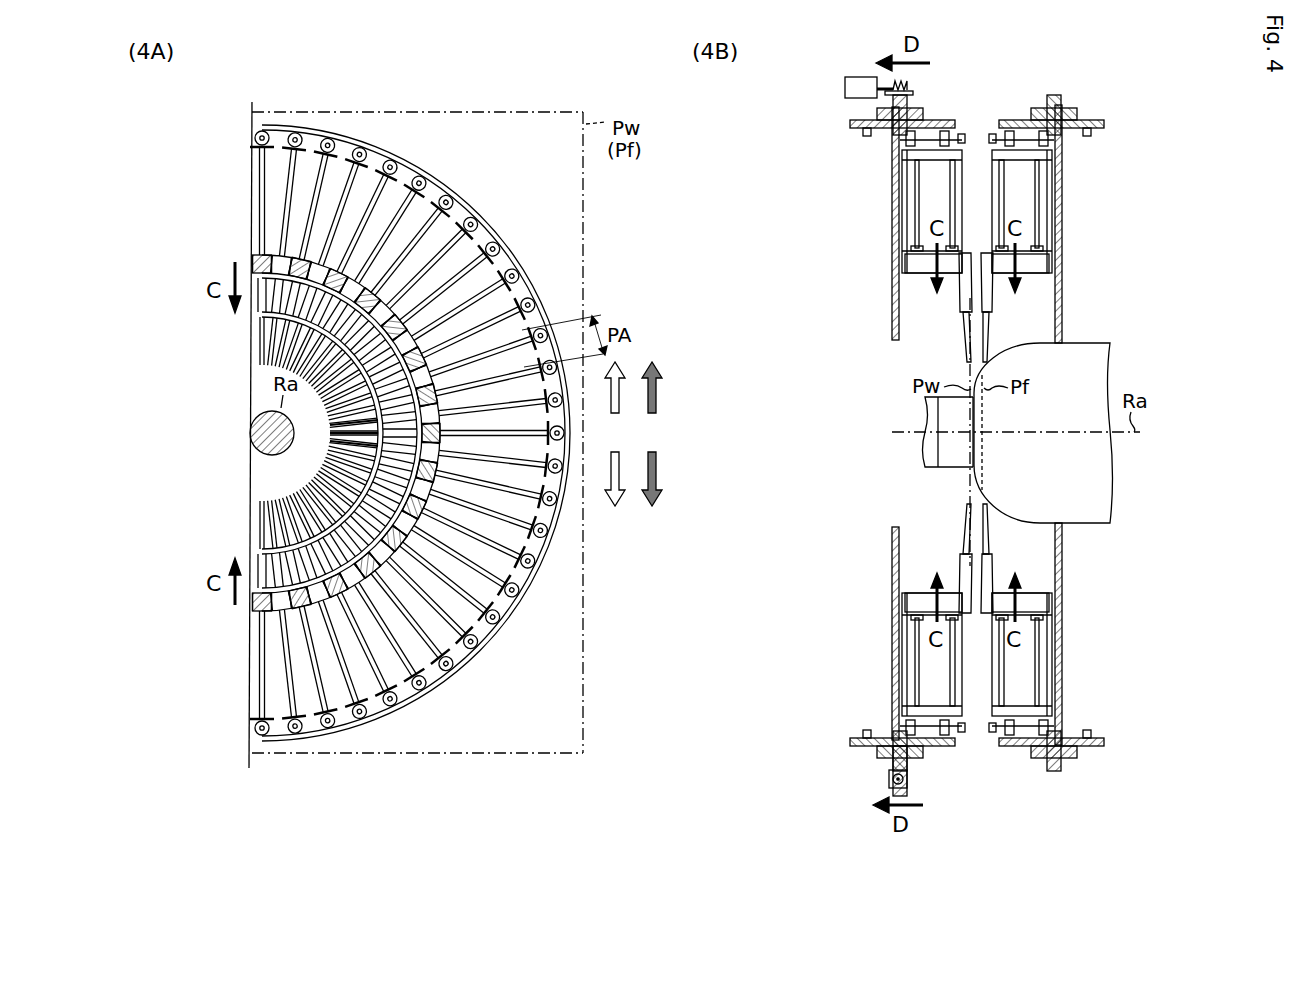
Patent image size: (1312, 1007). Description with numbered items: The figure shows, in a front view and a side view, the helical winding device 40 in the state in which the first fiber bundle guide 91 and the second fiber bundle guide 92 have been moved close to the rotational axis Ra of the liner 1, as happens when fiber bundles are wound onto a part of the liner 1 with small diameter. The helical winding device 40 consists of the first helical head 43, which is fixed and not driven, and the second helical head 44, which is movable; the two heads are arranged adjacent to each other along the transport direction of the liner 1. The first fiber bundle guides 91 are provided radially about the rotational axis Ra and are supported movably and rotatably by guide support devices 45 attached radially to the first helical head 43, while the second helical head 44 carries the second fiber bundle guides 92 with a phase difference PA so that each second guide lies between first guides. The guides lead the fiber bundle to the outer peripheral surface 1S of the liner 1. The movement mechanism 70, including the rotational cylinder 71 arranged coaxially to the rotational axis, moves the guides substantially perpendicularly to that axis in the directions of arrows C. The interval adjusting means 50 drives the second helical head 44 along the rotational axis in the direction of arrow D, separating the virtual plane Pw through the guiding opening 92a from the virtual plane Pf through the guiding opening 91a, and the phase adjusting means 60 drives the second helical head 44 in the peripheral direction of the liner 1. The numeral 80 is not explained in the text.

In FIG. 4B, the liner 1 is at (1080, 300).
In FIG. 4B, the outer peripheral surface 1S is at (1090, 342).
In FIG. 4B, the helical winding device 40 is at (943, 307).
In FIG. 4B, the first helical head 43 is at (1142, 176).
In FIG. 4A, the second helical head 44 is at (497, 197).
In FIG. 4B, the second helical head 44 is at (808, 176).
In FIG. 4A, the guide support device 45 is at (486, 268).
In FIG. 4B, the guide support device 45 is at (884, 201).
In FIG. 4B, the interval adjusting means 50 is at (850, 72).
In FIG. 4B, the phase adjusting means 60 is at (884, 790).
In FIG. 4B, the movement mechanism 70 is at (848, 116).
In FIG. 4A, the rotational cylinder 71 is at (572, 432).
In FIG. 4B, the mounting portion 80 is at (1006, 110).
In FIG. 4A, the first fiber bundle guide 91 is at (331, 418).
In FIG. 4B, the first fiber bundle guide 91 is at (991, 332).
In FIG. 4B, the guiding opening 91a is at (988, 360).
In FIG. 4A, the second fiber bundle guide 92 is at (341, 432).
In FIG. 4B, the second fiber bundle guide 92 is at (958, 330).
In FIG. 4B, the guiding opening 92a is at (966, 360).